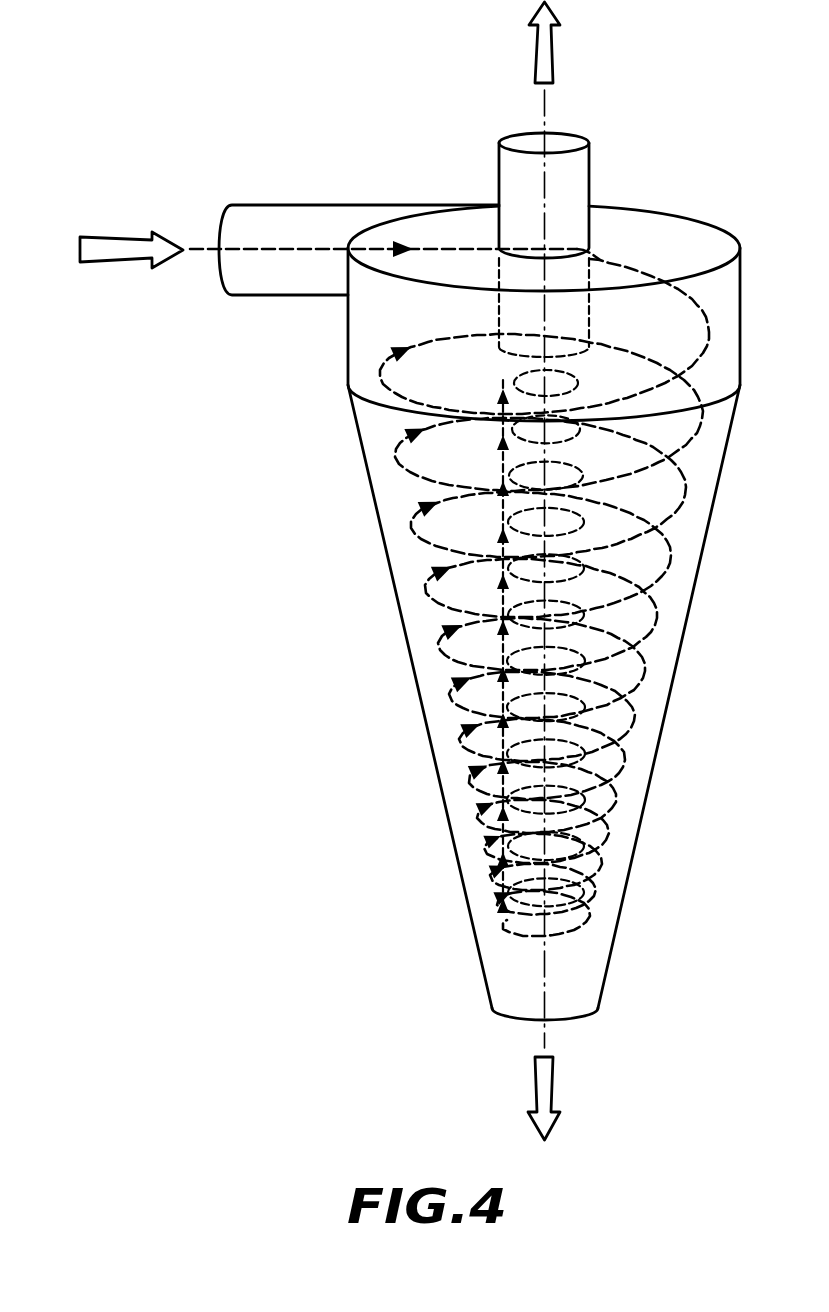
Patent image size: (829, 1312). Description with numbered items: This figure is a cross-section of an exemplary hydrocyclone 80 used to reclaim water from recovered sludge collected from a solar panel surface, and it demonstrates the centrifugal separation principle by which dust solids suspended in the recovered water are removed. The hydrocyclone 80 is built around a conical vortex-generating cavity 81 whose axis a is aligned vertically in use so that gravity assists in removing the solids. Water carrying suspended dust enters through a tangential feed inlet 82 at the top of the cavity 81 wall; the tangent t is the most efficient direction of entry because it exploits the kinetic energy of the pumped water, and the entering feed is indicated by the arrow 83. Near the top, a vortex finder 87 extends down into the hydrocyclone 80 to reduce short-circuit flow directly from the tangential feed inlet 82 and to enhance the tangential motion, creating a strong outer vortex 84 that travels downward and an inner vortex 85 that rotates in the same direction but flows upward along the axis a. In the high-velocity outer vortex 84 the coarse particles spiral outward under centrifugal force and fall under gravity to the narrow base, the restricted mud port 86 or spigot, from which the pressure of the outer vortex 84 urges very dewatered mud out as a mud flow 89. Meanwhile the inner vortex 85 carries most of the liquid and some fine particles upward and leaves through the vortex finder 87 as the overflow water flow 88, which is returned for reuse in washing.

The hydrocyclone 80 is at (656, 156).
The conical vortex-generating cavity 81 is at (418, 691).
The tangential feed inlet 82 is at (349, 211).
The feed flow 83 is at (123, 258).
The outer vortex 84 is at (706, 323).
The inner vortex 85 is at (584, 383).
The restricted mud port 86 is at (497, 1012).
The vortex finder 87 is at (501, 319).
The water flow 88 is at (553, 57).
The mud flow 89 is at (555, 1088).
The axis a is at (549, 109).
The tangent t is at (305, 250).